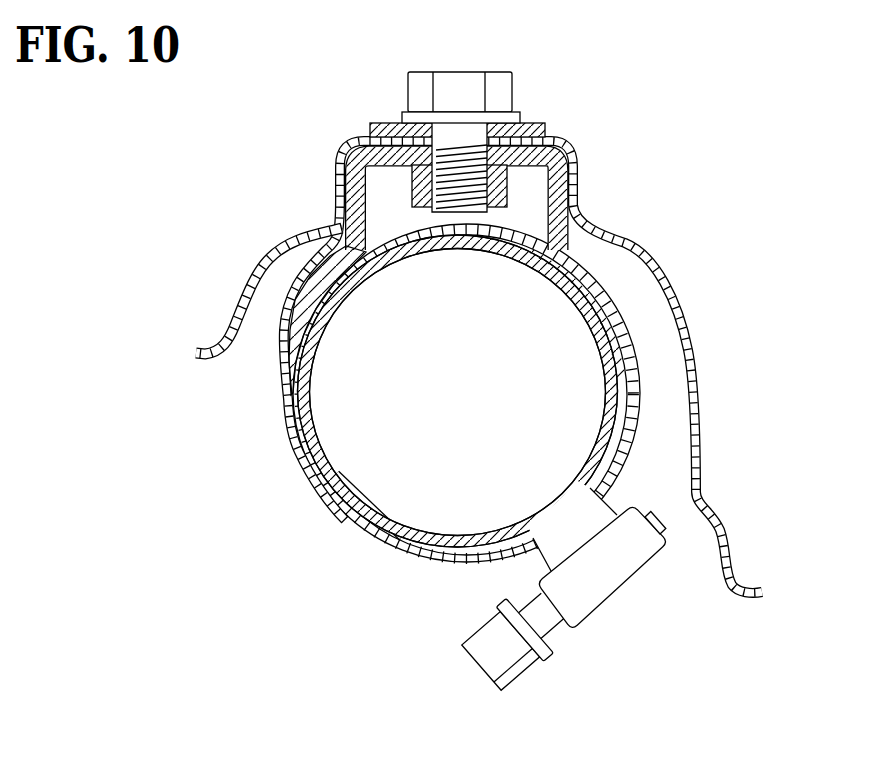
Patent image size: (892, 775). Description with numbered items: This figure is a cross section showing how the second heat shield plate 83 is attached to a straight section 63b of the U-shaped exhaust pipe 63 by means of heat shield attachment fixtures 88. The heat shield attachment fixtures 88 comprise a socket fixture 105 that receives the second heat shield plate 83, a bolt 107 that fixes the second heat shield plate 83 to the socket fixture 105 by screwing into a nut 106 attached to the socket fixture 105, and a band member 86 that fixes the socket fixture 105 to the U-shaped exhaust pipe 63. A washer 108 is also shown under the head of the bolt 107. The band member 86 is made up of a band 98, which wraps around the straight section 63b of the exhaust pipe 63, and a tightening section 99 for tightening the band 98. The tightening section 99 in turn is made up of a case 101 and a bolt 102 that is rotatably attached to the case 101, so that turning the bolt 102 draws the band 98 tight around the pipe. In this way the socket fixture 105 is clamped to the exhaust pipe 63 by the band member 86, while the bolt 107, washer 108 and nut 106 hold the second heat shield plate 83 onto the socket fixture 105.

The U-shaped exhaust pipe 63 is at (418, 256).
The straight section 63b is at (333, 468).
The second heat shield plate 83 is at (670, 272).
The band member 86 is at (332, 517).
The heat shield attachment fixtures 88 is at (403, 98).
The band 98 is at (285, 427).
The tightening section 99 is at (462, 647).
The case 101 is at (621, 596).
The bolt 102 is at (480, 667).
The socket fixture 105 is at (320, 237).
The nut 106 is at (407, 185).
The bolt 107 is at (512, 93).
The washer 108 is at (545, 131).